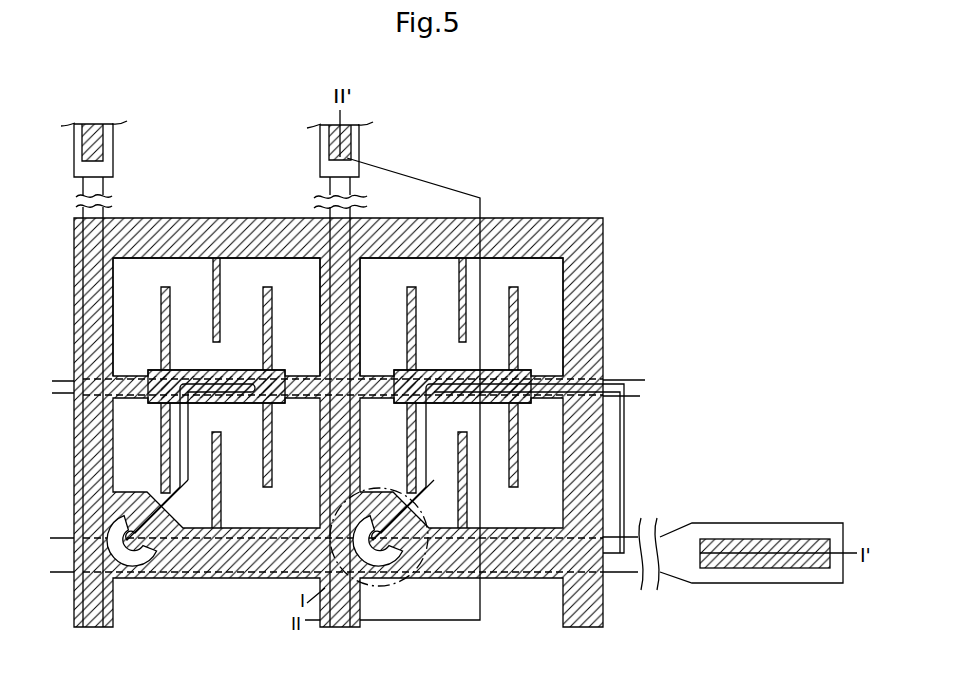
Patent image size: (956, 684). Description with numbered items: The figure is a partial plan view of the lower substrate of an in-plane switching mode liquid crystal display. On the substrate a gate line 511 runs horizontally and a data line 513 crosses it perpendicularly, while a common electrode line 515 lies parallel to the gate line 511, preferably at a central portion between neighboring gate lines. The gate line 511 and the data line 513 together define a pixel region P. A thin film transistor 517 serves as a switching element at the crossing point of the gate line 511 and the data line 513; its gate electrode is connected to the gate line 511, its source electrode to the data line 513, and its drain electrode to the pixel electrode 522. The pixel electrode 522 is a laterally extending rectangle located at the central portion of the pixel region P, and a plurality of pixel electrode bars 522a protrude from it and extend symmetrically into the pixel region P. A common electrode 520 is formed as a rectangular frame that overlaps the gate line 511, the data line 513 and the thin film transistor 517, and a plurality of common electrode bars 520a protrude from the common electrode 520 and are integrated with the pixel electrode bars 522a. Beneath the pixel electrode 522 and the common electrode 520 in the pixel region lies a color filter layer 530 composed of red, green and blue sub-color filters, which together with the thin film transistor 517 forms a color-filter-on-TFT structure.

The gate line 511 is at (616, 537).
The data line 513 is at (335, 230).
The common electrode line 515 is at (632, 385).
The thin film transistor 517 is at (400, 585).
The common electrode 520 is at (588, 280).
The common electrode bars 520a is at (463, 482).
The pixel electrode 522 is at (530, 370).
The pixel electrode bars 522a is at (513, 333).
The color filter layer 530 is at (182, 272).
The pixel region P is at (540, 278).